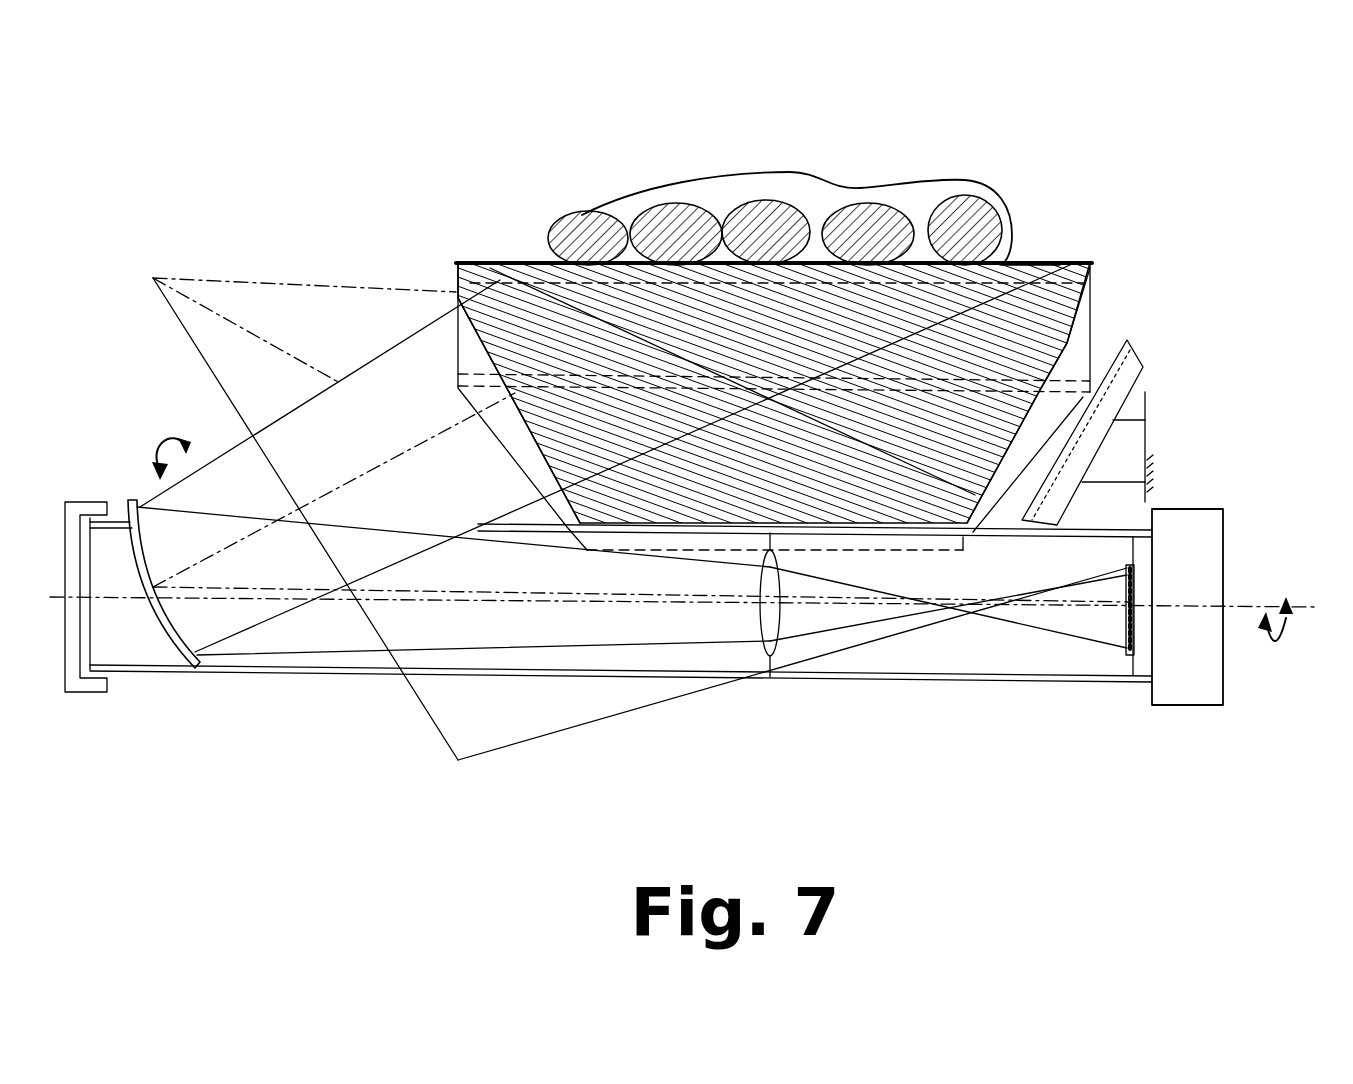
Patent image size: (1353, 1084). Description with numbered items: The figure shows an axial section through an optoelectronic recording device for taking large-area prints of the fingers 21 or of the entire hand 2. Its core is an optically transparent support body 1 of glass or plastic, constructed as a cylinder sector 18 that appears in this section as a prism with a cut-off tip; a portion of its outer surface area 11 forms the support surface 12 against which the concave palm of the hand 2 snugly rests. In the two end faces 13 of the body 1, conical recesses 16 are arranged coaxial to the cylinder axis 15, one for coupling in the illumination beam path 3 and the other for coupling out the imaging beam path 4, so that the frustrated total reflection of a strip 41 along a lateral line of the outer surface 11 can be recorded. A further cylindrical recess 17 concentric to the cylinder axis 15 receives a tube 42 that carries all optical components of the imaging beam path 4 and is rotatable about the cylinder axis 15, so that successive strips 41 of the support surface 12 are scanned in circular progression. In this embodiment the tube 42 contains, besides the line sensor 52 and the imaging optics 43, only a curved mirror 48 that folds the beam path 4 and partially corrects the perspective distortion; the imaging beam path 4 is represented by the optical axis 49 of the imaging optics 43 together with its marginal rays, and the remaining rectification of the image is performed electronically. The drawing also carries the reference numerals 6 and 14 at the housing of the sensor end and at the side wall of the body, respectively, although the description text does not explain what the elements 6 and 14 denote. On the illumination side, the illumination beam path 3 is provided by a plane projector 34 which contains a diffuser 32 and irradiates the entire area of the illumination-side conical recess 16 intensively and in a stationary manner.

The support body 1 is at (515, 317).
The hand 2 is at (707, 190).
The illumination beam path 3 is at (1092, 265).
The imaging beam path 4 is at (308, 505).
The image sensor unit 6 is at (1213, 667).
The outer surface area 11 is at (505, 275).
The support surface 12 is at (1030, 262).
The end face 13 is at (1092, 288).
The housing side wall 14 is at (457, 272).
The cylinder axis 15 is at (1247, 607).
The conical recess 16 is at (530, 440).
The cylindrical recess 17 is at (693, 523).
The cylinder sector 18 is at (452, 277).
The fingers 21 is at (806, 230).
The diffuser 32 is at (1140, 338).
The plane projector 34 is at (1100, 448).
The strip 41 is at (790, 283).
The tube 42 is at (343, 673).
The imaging optics 43 is at (772, 665).
The curved mirror 48 is at (177, 657).
The optical axis 49 is at (482, 593).
The line sensor 52 is at (1127, 650).